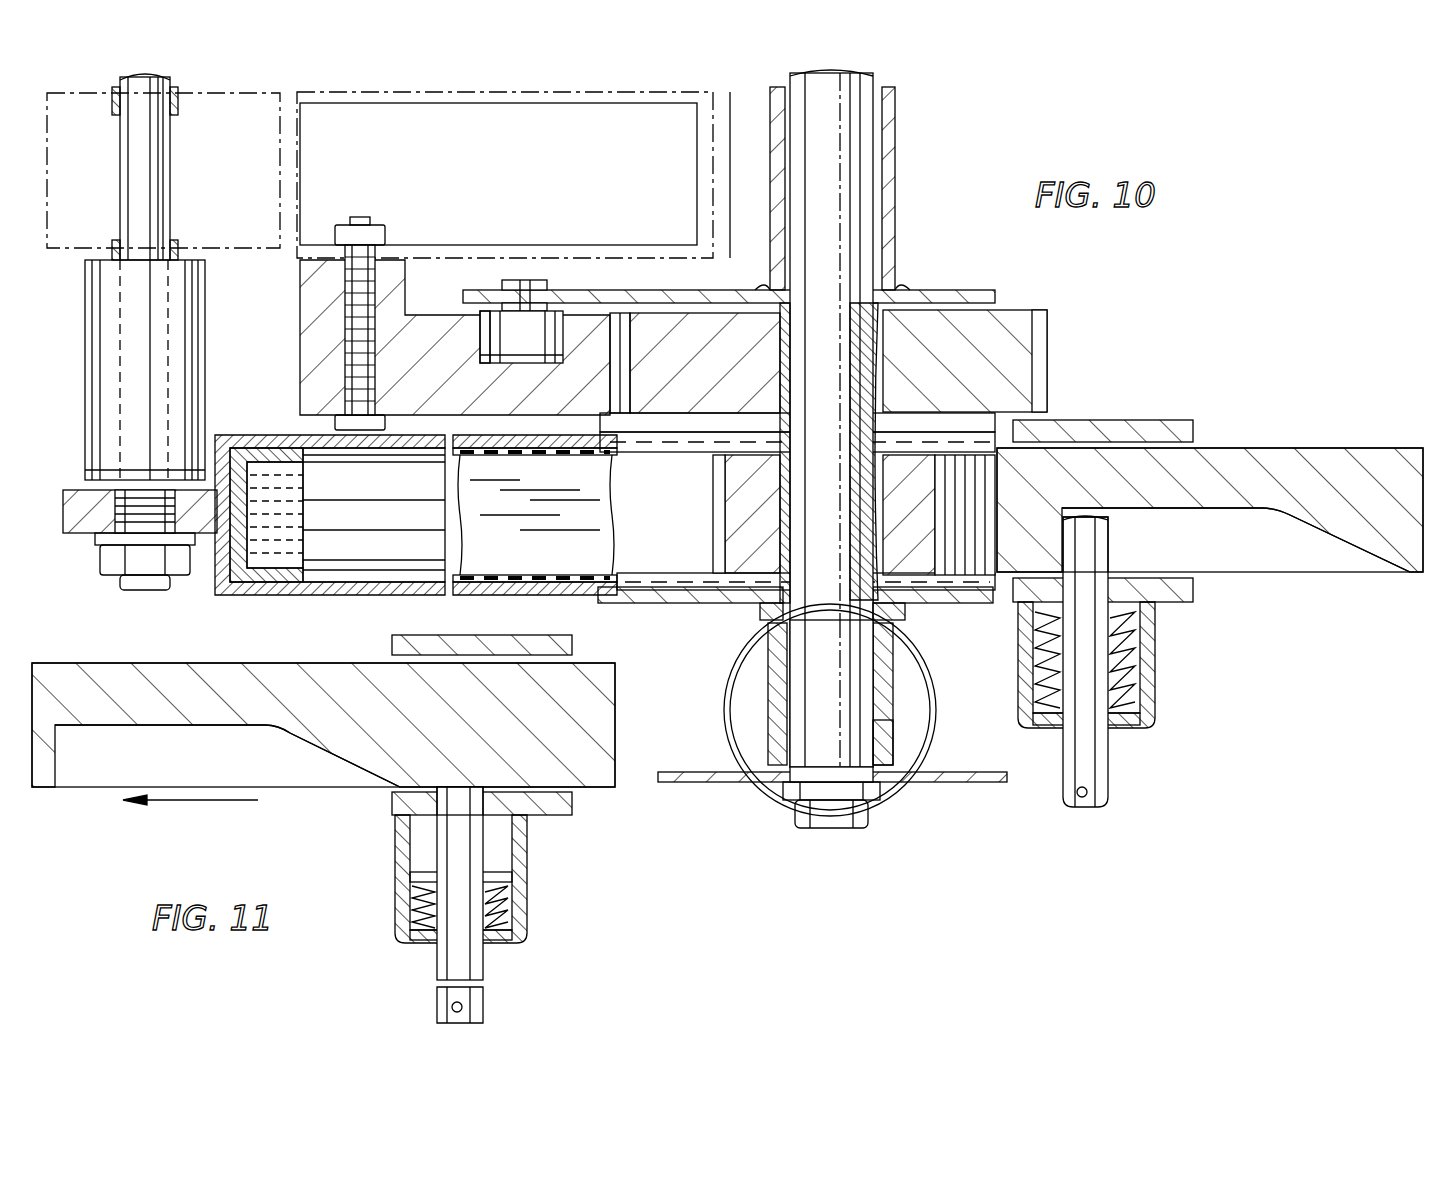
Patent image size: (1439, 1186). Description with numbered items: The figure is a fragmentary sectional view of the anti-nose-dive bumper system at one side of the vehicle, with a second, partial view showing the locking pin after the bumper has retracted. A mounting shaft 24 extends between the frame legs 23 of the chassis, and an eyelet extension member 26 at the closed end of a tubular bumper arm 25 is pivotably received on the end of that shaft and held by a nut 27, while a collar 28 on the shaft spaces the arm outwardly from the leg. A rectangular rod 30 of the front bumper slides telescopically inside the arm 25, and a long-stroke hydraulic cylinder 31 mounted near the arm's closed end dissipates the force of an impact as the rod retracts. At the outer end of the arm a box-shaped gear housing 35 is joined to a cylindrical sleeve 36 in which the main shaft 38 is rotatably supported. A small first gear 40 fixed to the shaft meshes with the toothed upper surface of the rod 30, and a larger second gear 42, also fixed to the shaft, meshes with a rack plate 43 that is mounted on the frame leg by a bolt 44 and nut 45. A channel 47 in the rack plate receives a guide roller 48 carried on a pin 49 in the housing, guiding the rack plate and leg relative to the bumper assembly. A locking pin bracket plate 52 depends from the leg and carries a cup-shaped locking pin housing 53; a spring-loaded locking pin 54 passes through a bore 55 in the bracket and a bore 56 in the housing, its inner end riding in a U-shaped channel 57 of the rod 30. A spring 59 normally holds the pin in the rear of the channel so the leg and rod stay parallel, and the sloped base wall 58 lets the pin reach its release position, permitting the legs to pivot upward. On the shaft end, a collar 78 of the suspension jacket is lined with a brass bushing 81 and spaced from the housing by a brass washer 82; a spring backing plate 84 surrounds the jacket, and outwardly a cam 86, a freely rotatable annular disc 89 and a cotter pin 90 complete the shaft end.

In FIG. 10, the frame legs 23 is at (518, 250).
In FIG. 10, the mounting shaft 24 is at (163, 190).
In FIG. 10, the bumper arms 25 is at (344, 595).
In FIG. 10, the eyelet extension member 26 is at (73, 490).
In FIG. 10, the nut 27 is at (130, 568).
In FIG. 10, the collars 28 is at (95, 372).
In FIG. 10, the rods 30 is at (1410, 572).
In FIG. 11, the rods 30 is at (610, 785).
In FIG. 10, the hydraulic cylinders 31 is at (286, 586).
In FIG. 10, the gear housing 35 is at (645, 603).
In FIG. 10, the sleeve 36 is at (885, 230).
In FIG. 10, the main shaft 38 is at (860, 165).
In FIG. 10, the first gears 40 is at (740, 492).
In FIG. 10, the second gears 42 is at (1013, 318).
In FIG. 10, the rack plates 43 is at (310, 340).
In FIG. 10, the bolt 44 is at (345, 385).
In FIG. 10, the nut 45 is at (380, 240).
In FIG. 10, the channel 47 is at (488, 345).
In FIG. 10, the guide rollers 48 is at (535, 363).
In FIG. 10, the pin 49 is at (535, 285).
In FIG. 10, the locking pin bracket plate 52 is at (1138, 419).
In FIG. 11, the locking pin bracket plate 52 is at (560, 815).
In FIG. 10, the locking pin housing 53 is at (1155, 700).
In FIG. 11, the locking pin housing 53 is at (527, 880).
In FIG. 10, the locking pin 54 is at (1095, 755).
In FIG. 11, the locking pin 54 is at (483, 965).
In FIG. 10, the bore 55 is at (1100, 572).
In FIG. 11, the bore 55 is at (460, 785).
In FIG. 10, the bore 56 is at (1062, 725).
In FIG. 11, the bore 56 is at (440, 940).
In FIG. 10, the channel 57 is at (1230, 510).
In FIG. 11, the channel 57 is at (195, 725).
In FIG. 10, the sloped base wall 58 is at (1345, 545).
In FIG. 11, the sloped base wall 58 is at (315, 745).
In FIG. 10, the spring 59 is at (1130, 650).
In FIG. 11, the spring 59 is at (510, 905).
In FIG. 10, the collar 78 is at (893, 665).
In FIG. 10, the brass bushing 81 is at (893, 730).
In FIG. 10, the brass washer 82 is at (905, 615).
In FIG. 10, the spring backing plate 84 is at (930, 700).
In FIG. 10, the cam 86 is at (1000, 782).
In FIG. 10, the annular disc 89 is at (880, 800).
In FIG. 10, the cotter pin 90 is at (805, 815).